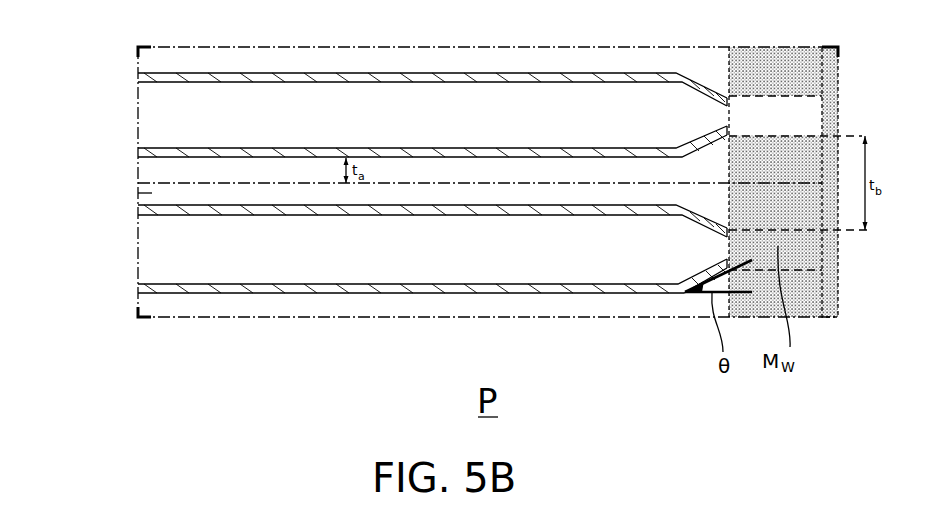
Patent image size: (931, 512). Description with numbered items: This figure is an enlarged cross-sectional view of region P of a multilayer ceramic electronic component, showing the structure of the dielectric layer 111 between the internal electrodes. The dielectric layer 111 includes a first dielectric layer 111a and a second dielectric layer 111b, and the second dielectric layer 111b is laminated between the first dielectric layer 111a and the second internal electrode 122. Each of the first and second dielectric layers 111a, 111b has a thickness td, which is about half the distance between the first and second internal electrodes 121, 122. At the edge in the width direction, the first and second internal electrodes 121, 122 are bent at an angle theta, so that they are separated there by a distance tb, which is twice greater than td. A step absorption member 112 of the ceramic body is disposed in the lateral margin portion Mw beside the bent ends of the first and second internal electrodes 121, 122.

The dielectric layer 111 is at (62, 171).
The first dielectric layer 111a is at (152, 173).
The second dielectric layer 111b is at (140, 194).
The step absorption member 112 is at (784, 136).
The first internal electrode 121 is at (598, 215).
The second internal electrode 122 is at (648, 291).